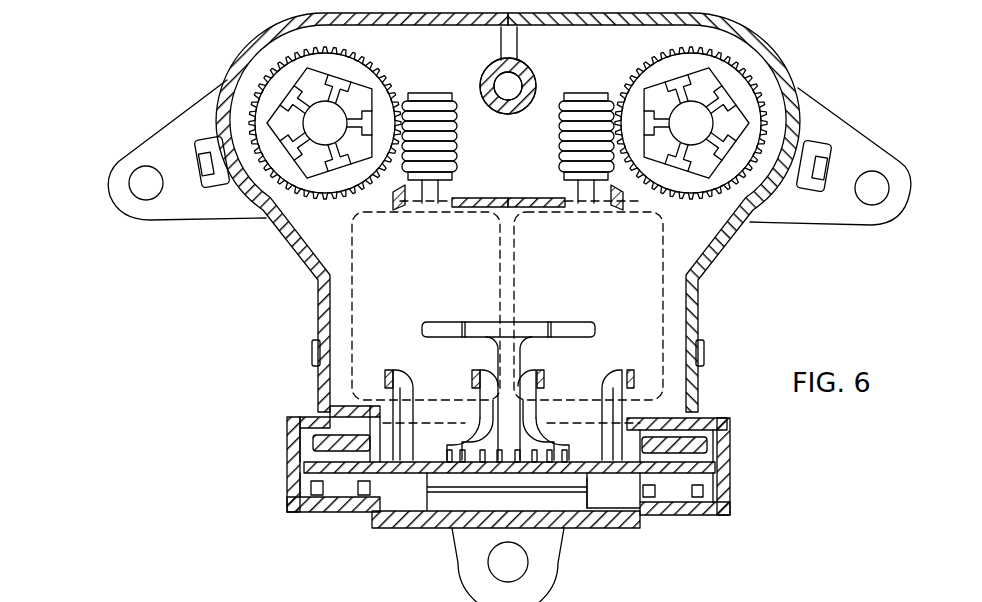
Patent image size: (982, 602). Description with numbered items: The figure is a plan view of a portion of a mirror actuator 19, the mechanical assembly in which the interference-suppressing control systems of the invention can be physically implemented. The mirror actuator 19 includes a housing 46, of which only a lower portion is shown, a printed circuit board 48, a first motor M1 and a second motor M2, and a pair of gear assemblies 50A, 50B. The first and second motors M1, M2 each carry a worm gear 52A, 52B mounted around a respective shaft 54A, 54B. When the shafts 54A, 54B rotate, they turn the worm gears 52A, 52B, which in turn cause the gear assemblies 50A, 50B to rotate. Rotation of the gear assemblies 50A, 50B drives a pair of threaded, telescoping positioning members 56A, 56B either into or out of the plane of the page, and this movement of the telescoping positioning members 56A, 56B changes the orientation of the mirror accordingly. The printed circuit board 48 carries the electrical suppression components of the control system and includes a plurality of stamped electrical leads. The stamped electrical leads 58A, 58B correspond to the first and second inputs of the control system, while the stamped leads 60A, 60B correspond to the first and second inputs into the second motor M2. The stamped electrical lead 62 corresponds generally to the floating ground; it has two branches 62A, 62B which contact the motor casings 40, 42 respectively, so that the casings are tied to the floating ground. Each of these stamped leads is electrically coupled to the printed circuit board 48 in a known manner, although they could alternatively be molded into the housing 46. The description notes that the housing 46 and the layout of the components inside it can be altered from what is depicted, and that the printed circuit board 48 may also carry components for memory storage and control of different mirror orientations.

The mirror actuator 19 is at (170, 273).
The housing 46 is at (244, 46).
The gear assembly 50A is at (397, 60).
The gear assembly 50B is at (630, 62).
The worm gear 52A is at (458, 115).
The worm gear 52B is at (560, 115).
The shaft 54A is at (418, 189).
The shaft 54B is at (604, 192).
The threaded telescoping positioning member 56A is at (316, 118).
The threaded telescoping positioning member 56B is at (700, 118).
The motor casing 40 is at (557, 254).
The motor casing 42 is at (483, 254).
The first motor M1 is at (665, 242).
The second motor M2 is at (350, 240).
The stamped electrical lead 62 is at (497, 327).
The branch 62A is at (443, 327).
The branch 62B is at (565, 327).
The stamped electrical lead 58A is at (612, 447).
The stamped electrical lead 58B is at (635, 480).
The stamped lead 60A is at (400, 447).
The stamped lead 60B is at (458, 447).
The printed circuit board 48 is at (328, 512).